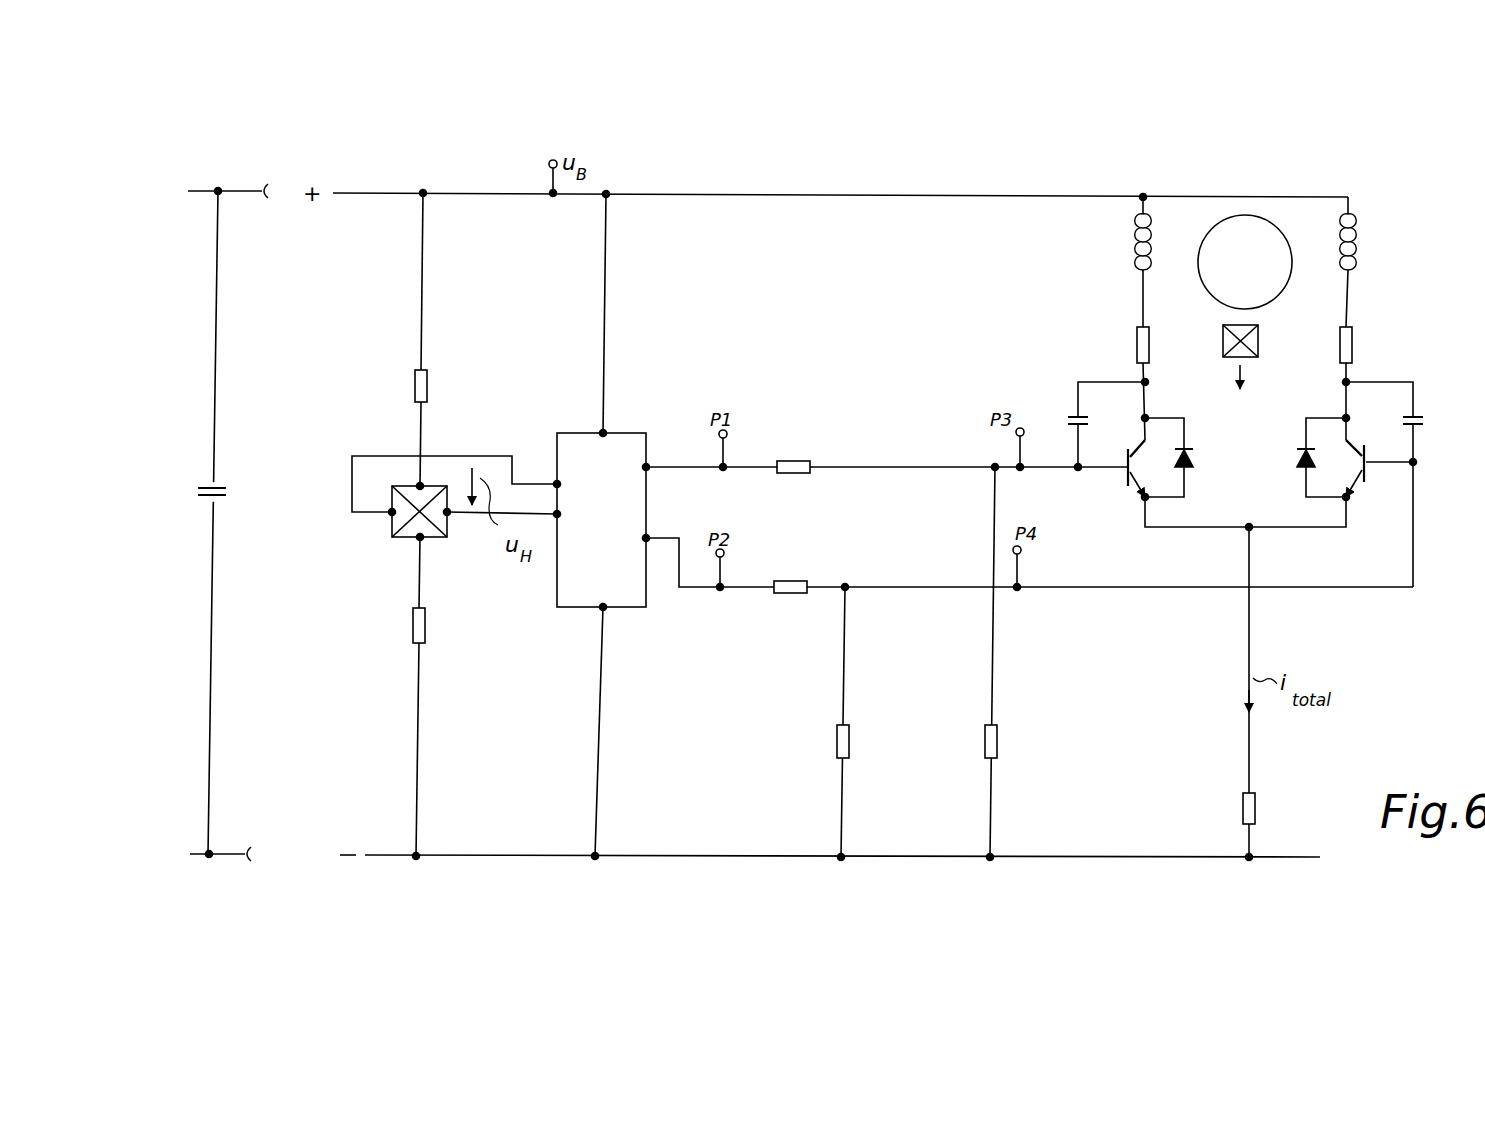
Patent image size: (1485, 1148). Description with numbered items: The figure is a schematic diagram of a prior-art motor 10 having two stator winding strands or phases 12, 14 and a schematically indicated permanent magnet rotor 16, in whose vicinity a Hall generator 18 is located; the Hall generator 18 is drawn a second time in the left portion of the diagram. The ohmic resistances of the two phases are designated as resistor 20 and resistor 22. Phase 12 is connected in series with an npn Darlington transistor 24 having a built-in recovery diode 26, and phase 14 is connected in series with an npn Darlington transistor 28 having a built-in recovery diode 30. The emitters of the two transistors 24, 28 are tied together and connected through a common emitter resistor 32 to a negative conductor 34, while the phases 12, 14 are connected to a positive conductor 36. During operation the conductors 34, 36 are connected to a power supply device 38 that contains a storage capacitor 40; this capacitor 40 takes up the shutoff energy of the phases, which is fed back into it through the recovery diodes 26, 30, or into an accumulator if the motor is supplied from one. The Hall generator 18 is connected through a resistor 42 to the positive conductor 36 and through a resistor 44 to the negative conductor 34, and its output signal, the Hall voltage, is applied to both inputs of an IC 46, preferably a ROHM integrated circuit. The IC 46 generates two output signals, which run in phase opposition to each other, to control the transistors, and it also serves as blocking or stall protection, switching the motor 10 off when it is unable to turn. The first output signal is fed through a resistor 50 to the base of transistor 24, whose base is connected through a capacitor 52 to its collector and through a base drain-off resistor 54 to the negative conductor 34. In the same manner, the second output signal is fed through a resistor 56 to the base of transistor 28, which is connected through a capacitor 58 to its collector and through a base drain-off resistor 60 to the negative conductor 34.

The motor 10 is at (1266, 194).
The stator winding strand 12 is at (1131, 250).
The stator winding strand 14 is at (1360, 240).
The permanent magnet rotor 16 is at (1280, 282).
The Hall generator 18 is at (400, 540).
The ohmic resistor 20 is at (1136, 344).
The ohmic resistor 22 is at (1352, 345).
The npn Darlington transistor 24 is at (1126, 476).
The recovery diode 26 is at (1195, 457).
The npn Darlington transistor 28 is at (1368, 471).
The recovery diode 30 is at (1298, 456).
The common emitter resistor 32 is at (1256, 808).
The negative conductor 34 is at (1139, 862).
The positive conductor 36 is at (835, 195).
The power supply device 38 is at (190, 449).
The storage capacitor 40 is at (216, 497).
The resistor 42 is at (428, 386).
The resistor 44 is at (426, 625).
The IC 46 is at (565, 610).
The resistor 50 is at (800, 460).
The capacitor 52 is at (1068, 410).
The base drain-off resistor 54 is at (998, 740).
The resistor 56 is at (793, 580).
The capacitor 58 is at (1423, 418).
The base drain-off resistor 60 is at (850, 740).